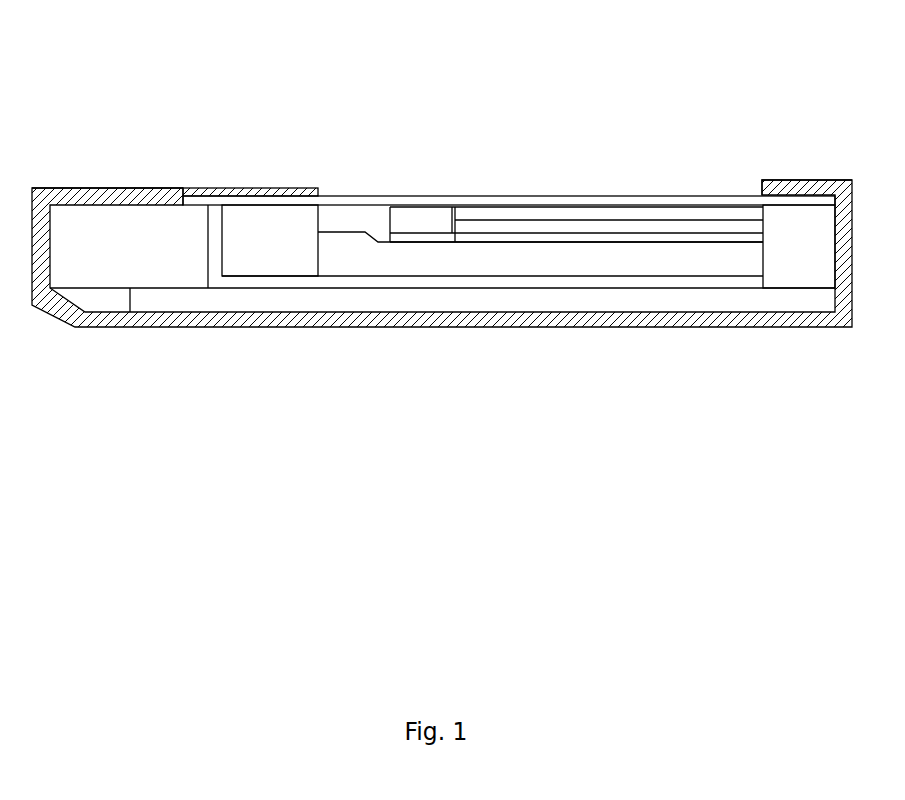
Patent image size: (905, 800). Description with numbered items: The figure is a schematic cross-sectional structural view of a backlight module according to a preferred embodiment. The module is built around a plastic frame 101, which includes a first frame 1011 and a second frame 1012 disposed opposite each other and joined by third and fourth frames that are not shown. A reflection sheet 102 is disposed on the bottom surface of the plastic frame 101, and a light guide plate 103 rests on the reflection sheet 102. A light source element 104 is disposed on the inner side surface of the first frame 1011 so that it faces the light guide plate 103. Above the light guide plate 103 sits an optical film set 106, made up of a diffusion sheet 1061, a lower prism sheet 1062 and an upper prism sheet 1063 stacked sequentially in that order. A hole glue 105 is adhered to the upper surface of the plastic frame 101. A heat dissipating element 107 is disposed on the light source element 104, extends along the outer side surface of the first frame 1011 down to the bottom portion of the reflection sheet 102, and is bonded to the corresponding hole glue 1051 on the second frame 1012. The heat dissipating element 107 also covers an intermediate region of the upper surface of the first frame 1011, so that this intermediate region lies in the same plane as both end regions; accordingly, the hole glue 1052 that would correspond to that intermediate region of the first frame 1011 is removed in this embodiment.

The plastic frame 101 is at (470, 569).
The first frame 1011 is at (78, 257).
The second frame 1012 is at (802, 272).
The reflection sheet 102 is at (430, 297).
The light guide plate 103 is at (577, 260).
The light source element 104 is at (253, 260).
The hole glue 105 is at (312, 87).
The hole glue 1051 is at (790, 180).
The hole glue 1052 is at (232, 198).
The optical film set 106 is at (608, 62).
The diffusion sheet 1061 is at (540, 240).
The lower prism sheet 1062 is at (620, 230).
The upper prism sheet 1063 is at (682, 215).
The heat dissipating element 107 is at (122, 193).